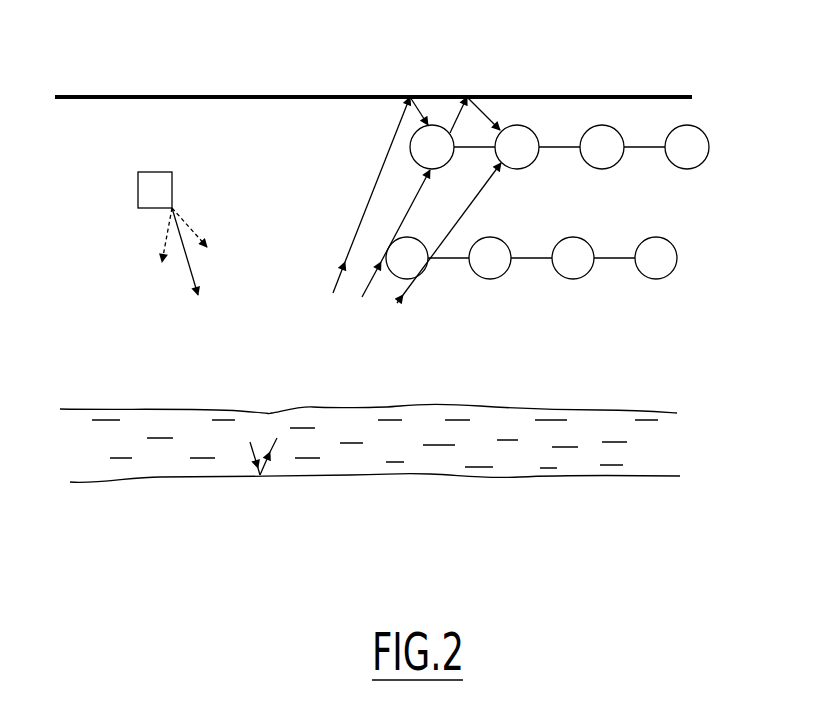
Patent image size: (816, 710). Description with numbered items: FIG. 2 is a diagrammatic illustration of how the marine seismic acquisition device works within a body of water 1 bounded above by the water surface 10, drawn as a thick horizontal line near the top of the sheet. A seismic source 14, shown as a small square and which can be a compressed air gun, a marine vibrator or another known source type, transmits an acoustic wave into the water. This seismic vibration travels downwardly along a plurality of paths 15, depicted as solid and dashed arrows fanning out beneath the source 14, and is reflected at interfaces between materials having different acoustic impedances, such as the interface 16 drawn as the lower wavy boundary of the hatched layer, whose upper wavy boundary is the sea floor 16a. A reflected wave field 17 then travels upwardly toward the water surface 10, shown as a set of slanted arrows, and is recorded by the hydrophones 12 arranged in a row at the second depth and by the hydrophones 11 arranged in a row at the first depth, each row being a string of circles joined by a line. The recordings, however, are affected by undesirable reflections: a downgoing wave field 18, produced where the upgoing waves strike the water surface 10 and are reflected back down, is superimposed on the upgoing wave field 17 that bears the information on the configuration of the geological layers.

The body of water 1 is at (103, 377).
The water surface 10 is at (648, 97).
The hydrophones 11 is at (520, 155).
The hydrophones 12 is at (410, 263).
The seismic source 14 is at (170, 189).
The paths 15 is at (167, 225).
The interface 16 is at (647, 477).
The sea floor 16a is at (667, 413).
The reflected wave field 17 is at (369, 202).
The downgoing wave field 18 is at (480, 100).